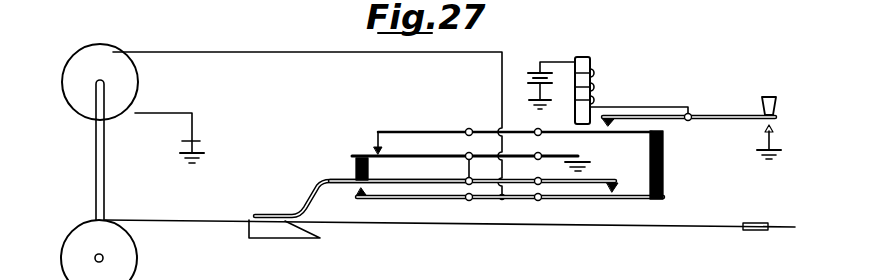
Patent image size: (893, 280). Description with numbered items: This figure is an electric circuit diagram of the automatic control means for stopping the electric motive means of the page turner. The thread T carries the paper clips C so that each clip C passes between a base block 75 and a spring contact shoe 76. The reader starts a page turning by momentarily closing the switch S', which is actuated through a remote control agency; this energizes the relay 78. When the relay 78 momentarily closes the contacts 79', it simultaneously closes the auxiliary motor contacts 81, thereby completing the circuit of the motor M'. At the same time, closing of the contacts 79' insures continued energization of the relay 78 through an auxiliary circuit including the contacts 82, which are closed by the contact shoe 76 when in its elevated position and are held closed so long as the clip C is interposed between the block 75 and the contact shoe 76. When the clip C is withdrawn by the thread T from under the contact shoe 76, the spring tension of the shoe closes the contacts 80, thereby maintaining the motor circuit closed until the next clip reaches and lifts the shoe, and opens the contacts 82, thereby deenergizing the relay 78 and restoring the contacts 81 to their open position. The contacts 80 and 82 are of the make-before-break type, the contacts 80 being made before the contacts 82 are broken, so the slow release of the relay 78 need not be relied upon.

The base block 75 is at (268, 240).
The spring contact shoe 76 is at (283, 213).
The relay 78 is at (594, 86).
The relay contacts 79' is at (689, 96).
The contacts 80 is at (352, 188).
The auxiliary motor contacts 81 is at (620, 193).
The auxiliary relay contacts 82 is at (373, 150).
The motor M' is at (85, 123).
The thread T is at (147, 221).
The paper clip C is at (249, 219).
The switch S' is at (785, 120).